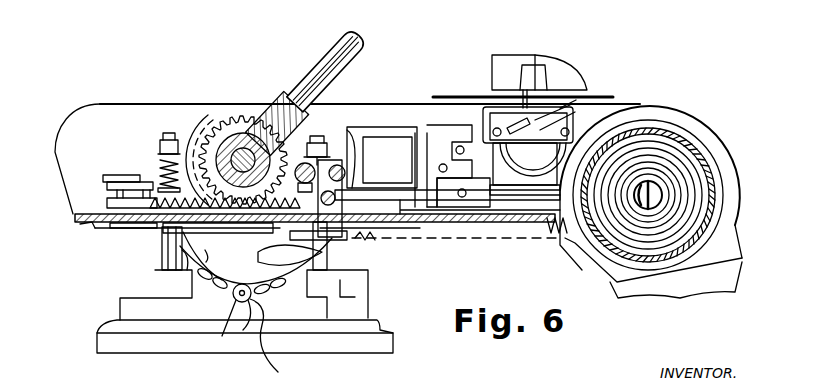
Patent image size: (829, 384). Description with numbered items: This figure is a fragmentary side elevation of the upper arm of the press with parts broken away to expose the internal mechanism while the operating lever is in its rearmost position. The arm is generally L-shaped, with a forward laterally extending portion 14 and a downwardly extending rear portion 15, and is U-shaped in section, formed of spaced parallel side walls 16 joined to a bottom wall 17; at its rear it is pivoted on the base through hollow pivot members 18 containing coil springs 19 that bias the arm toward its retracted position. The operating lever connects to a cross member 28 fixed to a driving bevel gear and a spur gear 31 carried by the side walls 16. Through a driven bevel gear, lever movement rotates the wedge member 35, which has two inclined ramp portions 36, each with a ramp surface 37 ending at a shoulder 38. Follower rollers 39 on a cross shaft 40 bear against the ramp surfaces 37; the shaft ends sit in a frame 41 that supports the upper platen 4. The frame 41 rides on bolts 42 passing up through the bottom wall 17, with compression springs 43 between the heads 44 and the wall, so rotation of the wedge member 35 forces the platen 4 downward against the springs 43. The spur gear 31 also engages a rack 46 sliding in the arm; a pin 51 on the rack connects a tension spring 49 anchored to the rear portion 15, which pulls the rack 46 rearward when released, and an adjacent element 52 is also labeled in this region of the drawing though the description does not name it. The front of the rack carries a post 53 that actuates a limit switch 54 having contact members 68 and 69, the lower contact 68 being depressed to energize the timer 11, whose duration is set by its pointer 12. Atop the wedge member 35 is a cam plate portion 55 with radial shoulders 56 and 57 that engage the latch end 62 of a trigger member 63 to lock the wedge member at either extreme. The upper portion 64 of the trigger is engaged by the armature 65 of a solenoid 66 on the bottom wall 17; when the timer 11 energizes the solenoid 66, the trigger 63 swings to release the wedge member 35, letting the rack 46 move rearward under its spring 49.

The upper platen 4 is at (102, 332).
The timer 11 is at (583, 105).
The pointer 12 is at (490, 72).
The forward laterally extending portion 14 is at (70, 198).
The downwardly extending rear portion 15 is at (606, 290).
The side walls 16 is at (140, 104).
The bottom wall 17 is at (73, 226).
The hollow pivot members 18 is at (680, 138).
The coil springs 19 is at (700, 178).
The cross member 28 is at (277, 108).
The spur gear 31 is at (223, 122).
The rotatable wedge member 35 is at (172, 258).
The inclined ramp portions 36 is at (240, 233).
The ramp surface 37 is at (172, 340).
The shoulder 38 is at (290, 258).
The follower rollers 39 is at (228, 322).
The cross shaft 40 is at (280, 341).
The frame 41 is at (372, 302).
The bolts 42 is at (163, 236).
The compression springs 43 is at (152, 172).
The heads 44 is at (178, 140).
The rack 46 is at (197, 138).
The tension spring 49 is at (548, 238).
The pin 51 is at (365, 172).
The plate 52 is at (447, 191).
The post or cam portion 53 is at (105, 194).
The limit switch 54 is at (107, 203).
The cam plate portion 55 is at (220, 256).
The radial shoulder 56 is at (160, 250).
The radial shoulder 57 is at (360, 233).
The latch end 62 is at (345, 238).
The trigger member 63 is at (354, 145).
The upper portion 64 is at (332, 150).
The armature 65 is at (478, 145).
The solenoid 66 is at (437, 142).
The contact member 68 is at (83, 224).
The contact member 69 is at (135, 182).